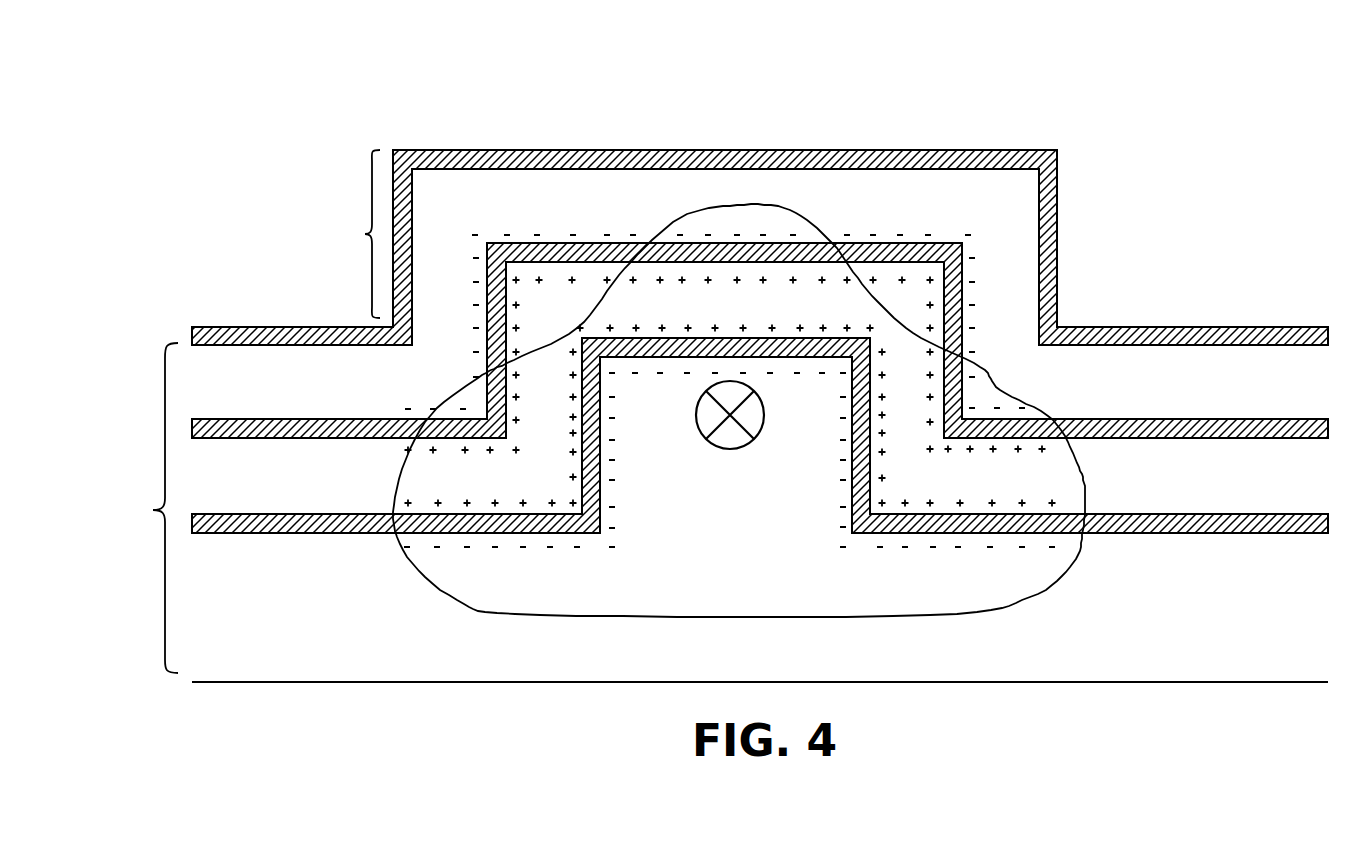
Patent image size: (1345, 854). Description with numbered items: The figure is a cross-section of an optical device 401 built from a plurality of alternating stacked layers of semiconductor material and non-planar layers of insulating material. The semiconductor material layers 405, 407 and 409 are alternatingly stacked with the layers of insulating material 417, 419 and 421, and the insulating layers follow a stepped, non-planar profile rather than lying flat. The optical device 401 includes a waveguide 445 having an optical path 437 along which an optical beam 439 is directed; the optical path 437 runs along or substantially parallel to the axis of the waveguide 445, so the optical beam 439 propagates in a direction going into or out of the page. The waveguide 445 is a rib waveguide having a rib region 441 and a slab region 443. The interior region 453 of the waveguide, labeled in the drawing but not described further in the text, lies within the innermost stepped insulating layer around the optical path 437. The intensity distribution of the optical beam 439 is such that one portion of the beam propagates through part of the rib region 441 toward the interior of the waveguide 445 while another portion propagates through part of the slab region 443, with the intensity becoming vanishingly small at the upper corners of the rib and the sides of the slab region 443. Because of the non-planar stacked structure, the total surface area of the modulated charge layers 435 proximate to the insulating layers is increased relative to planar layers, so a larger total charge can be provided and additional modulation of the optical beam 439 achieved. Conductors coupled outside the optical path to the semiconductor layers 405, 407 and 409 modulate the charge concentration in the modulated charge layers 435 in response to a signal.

The optical device 401 is at (313, 53).
The layer of semiconductor material 405 is at (258, 607).
The layer of semiconductor material 407 is at (258, 485).
The layer of semiconductor material 409 is at (258, 393).
The layer of insulating material 417 is at (325, 513).
The layer of insulating material 419 is at (333, 418).
The layer of insulating material 421 is at (300, 326).
The modulated charge layers 435 is at (622, 228).
The optical path 437 is at (765, 400).
The optical beam 439 is at (1076, 563).
The rib region 441 is at (346, 234).
The slab region 443 is at (145, 508).
The waveguide 445 is at (500, 120).
The central region 453 is at (810, 505).